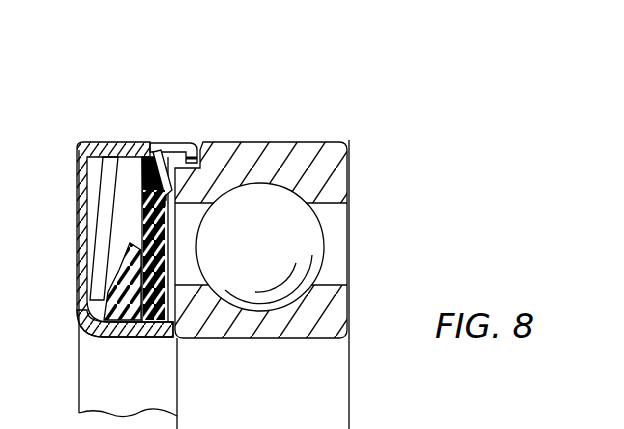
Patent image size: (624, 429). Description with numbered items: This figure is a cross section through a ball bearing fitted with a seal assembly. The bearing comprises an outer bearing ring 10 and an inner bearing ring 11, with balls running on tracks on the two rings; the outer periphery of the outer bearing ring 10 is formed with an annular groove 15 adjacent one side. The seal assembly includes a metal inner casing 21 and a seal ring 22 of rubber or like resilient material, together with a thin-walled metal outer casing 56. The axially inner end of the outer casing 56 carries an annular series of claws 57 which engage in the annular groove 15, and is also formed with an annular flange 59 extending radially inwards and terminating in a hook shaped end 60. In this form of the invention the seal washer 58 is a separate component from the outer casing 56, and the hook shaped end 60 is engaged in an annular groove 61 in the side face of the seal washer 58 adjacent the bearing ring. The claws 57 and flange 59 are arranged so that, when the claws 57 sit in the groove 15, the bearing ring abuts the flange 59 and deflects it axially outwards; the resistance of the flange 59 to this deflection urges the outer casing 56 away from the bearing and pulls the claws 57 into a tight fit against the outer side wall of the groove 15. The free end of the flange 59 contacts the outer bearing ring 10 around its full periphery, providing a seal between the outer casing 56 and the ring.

The outer bearing ring 10 is at (350, 154).
The inner bearing ring 11 is at (351, 329).
The annular groove 15 is at (257, 142).
The inner casing 21 is at (98, 327).
The seal ring 22 is at (121, 313).
The outer casing 56 is at (117, 142).
The claws 57 is at (181, 142).
The seal washer 58 is at (142, 263).
The annular flange 59 is at (158, 172).
The hook shaped end 60 is at (145, 188).
The annular groove 61 is at (138, 198).